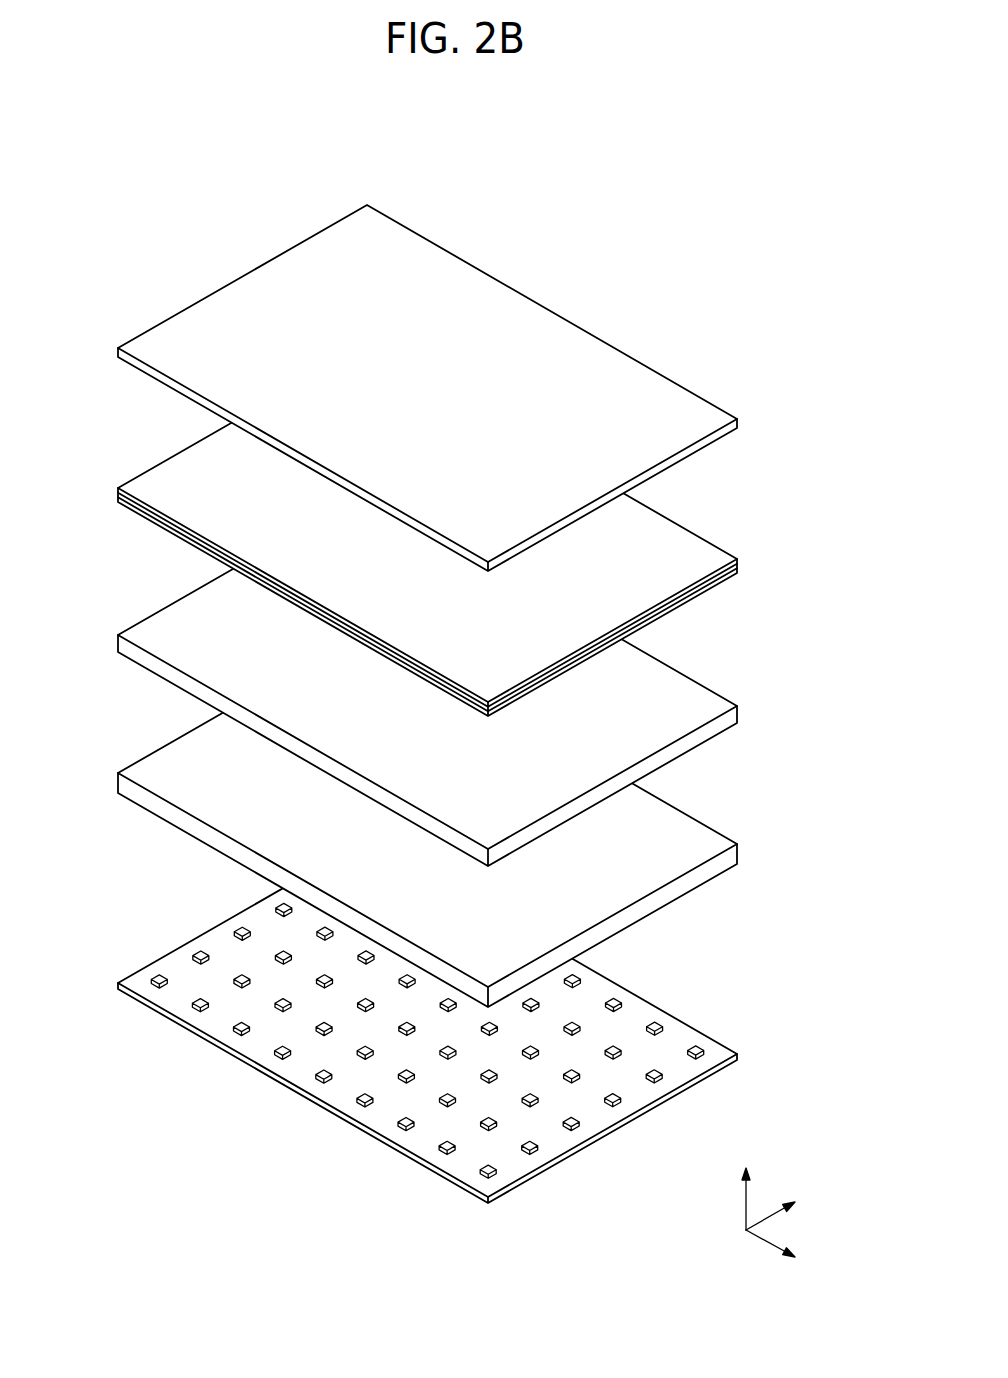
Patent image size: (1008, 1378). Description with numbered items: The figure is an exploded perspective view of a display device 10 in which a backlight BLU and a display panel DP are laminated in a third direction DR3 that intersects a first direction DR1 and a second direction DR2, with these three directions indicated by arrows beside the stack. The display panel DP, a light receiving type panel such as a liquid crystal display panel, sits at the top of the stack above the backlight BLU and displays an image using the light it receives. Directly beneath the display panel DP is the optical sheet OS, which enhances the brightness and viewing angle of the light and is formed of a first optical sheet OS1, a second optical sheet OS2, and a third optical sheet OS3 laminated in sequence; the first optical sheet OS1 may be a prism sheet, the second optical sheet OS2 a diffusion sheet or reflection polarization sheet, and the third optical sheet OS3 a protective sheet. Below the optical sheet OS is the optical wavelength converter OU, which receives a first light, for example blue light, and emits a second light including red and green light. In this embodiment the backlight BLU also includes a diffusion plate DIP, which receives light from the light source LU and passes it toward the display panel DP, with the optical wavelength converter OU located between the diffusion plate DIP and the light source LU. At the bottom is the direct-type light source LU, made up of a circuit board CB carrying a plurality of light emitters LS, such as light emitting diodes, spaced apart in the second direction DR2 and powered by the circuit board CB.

The display device 10 is at (461, 691).
The display panel DP is at (739, 421).
The backlight BLU is at (461, 774).
The optical sheet OS is at (494, 530).
The first optical sheet OS1 is at (820, 548).
The second optical sheet OS2 is at (741, 562).
The third optical sheet OS3 is at (740, 558).
The optical wavelength converter OU is at (744, 712).
The diffusion plate DIP is at (744, 850).
The light source LU is at (493, 1021).
The light emitter LS is at (692, 1046).
The circuit board CB is at (713, 1052).
The first direction DR1 is at (791, 1250).
The second direction DR2 is at (791, 1210).
The third direction DR3 is at (746, 1186).